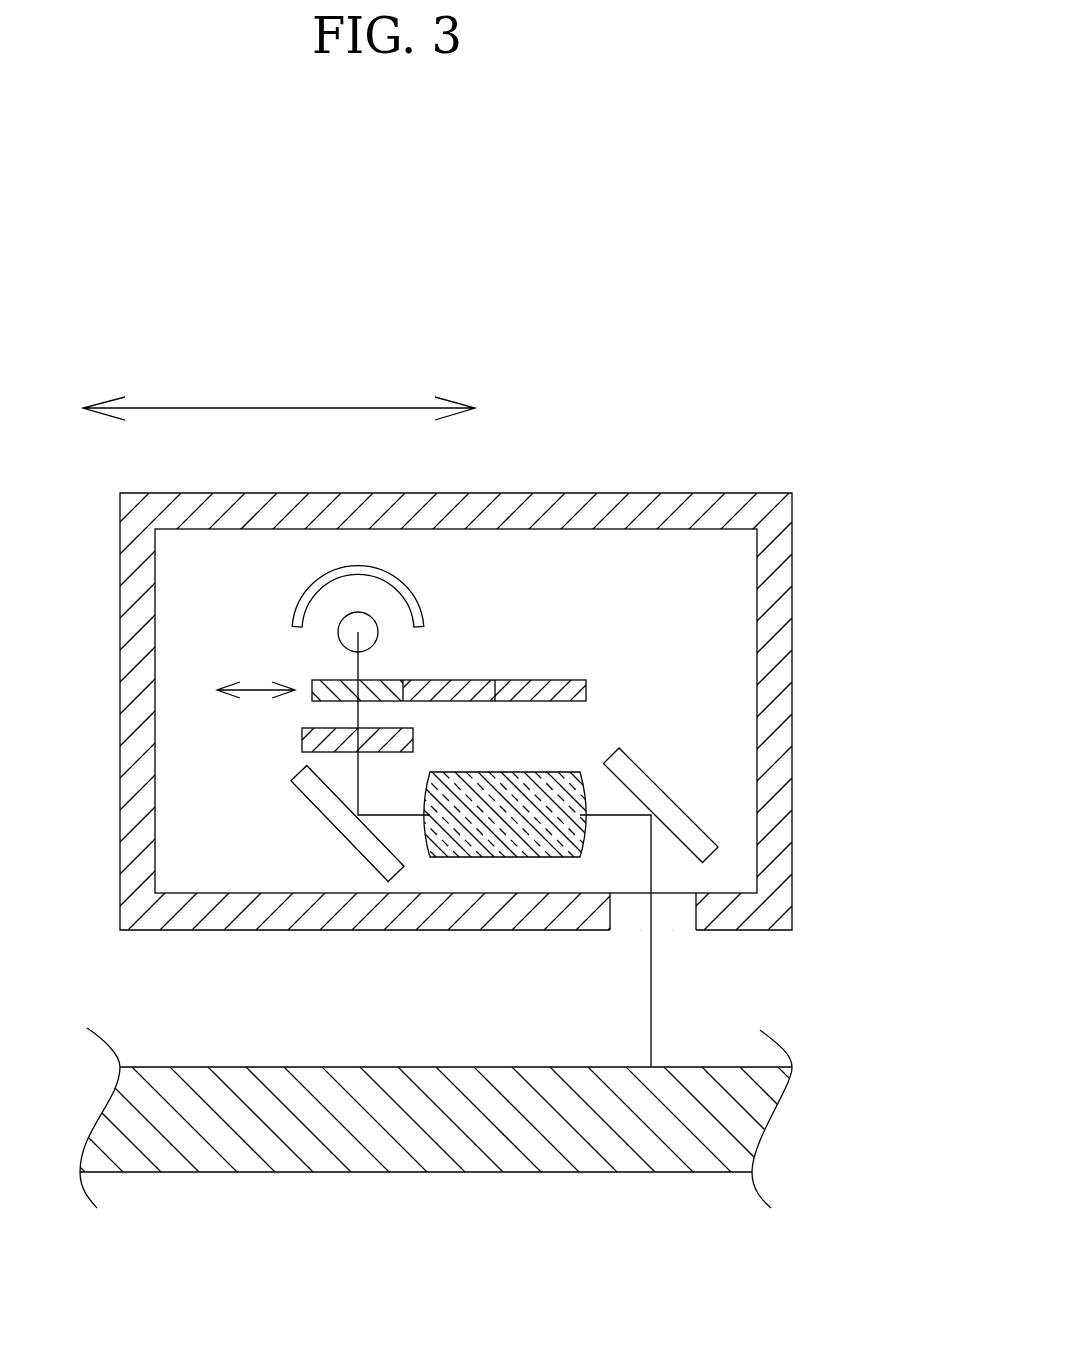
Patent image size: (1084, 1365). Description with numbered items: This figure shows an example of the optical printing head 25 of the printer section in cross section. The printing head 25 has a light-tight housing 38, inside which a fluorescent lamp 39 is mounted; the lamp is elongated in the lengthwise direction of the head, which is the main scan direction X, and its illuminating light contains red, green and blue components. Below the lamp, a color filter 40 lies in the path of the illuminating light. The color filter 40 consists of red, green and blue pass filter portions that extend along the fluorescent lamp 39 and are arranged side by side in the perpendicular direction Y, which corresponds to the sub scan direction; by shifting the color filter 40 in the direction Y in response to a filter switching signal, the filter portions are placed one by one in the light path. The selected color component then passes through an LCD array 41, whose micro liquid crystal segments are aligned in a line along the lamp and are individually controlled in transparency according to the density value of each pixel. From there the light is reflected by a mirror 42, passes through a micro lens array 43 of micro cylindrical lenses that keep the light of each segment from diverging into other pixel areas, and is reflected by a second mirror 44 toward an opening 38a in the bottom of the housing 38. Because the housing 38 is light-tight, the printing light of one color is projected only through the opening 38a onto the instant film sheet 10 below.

The instant film sheet 10 is at (456, 1152).
The printing head 25 is at (729, 470).
The light-tight housing 38 is at (517, 500).
The opening 38a is at (696, 910).
The fluorescent lamp 39 is at (367, 623).
The color filter 40 is at (596, 677).
The LCD array 41 is at (302, 738).
The mirror 42 is at (323, 815).
The micro lens array 43 is at (515, 828).
The mirror 44 is at (663, 788).
The main scan direction X is at (280, 408).
The perpendicular direction Y is at (262, 688).